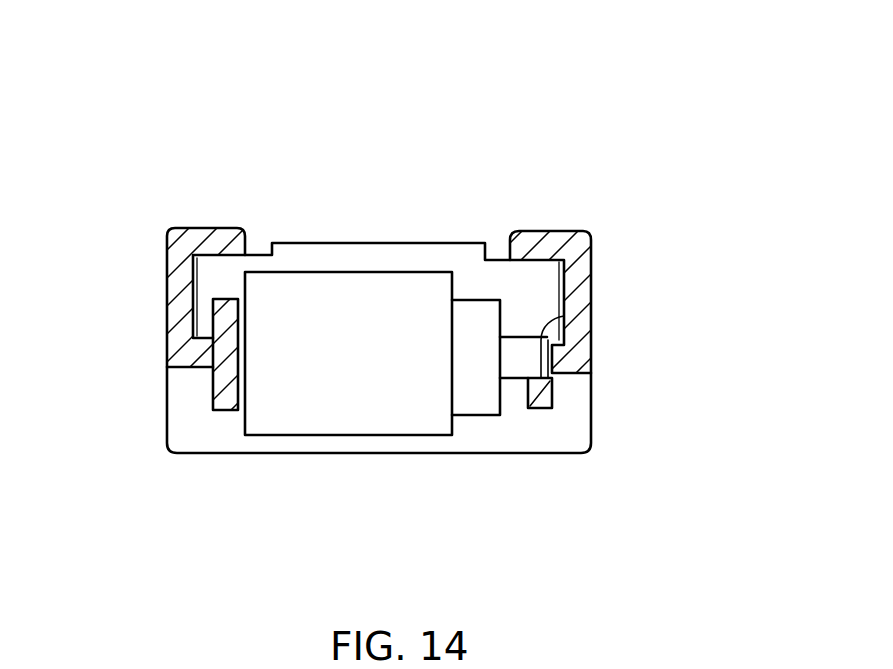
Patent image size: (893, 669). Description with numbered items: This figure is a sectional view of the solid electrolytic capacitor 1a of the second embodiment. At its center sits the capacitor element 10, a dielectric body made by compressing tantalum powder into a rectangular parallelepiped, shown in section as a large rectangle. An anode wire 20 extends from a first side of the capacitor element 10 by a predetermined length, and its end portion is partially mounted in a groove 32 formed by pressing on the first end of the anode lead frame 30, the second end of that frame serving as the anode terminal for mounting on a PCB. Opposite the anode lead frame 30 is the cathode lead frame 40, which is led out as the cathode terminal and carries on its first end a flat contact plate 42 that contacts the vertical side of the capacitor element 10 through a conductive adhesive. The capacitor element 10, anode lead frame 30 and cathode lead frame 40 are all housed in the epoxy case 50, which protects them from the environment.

The solid electrolytic capacitor 1a is at (590, 145).
The capacitor element 10 is at (333, 420).
The anode wire 20 is at (517, 372).
The anode lead frame 30 is at (575, 255).
The groove 32 is at (540, 340).
The cathode lead frame 40 is at (178, 273).
The flat contact plate 42 is at (218, 392).
The epoxy case 50 is at (397, 267).